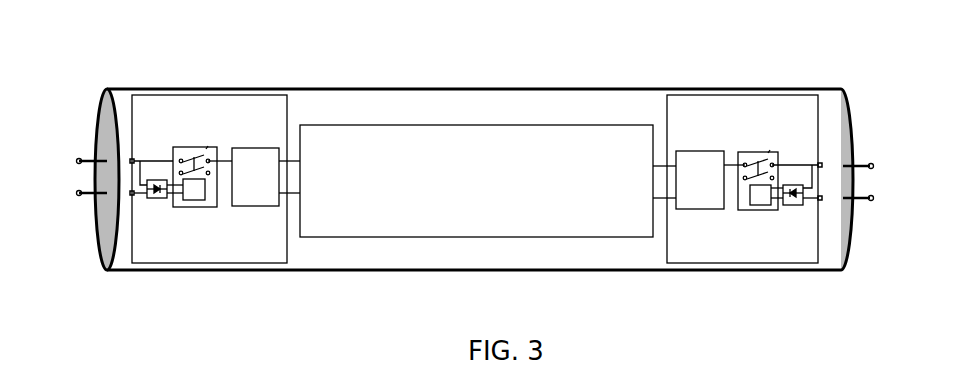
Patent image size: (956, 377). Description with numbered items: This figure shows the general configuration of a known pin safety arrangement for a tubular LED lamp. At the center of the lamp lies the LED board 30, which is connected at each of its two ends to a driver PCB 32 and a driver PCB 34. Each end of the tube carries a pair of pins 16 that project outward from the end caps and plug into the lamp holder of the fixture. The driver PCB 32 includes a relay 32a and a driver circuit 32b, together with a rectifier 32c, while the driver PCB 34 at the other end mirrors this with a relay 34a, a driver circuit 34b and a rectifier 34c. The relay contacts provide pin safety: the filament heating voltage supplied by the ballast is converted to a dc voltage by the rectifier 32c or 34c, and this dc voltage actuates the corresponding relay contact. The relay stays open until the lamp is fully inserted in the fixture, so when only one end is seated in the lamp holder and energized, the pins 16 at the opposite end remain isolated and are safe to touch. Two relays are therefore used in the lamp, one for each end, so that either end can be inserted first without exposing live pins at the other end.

The electrical pins / connector terminals 16 is at (72, 148).
The LED board 30 is at (542, 120).
The driver PCB 32 is at (235, 95).
The relay 32a is at (192, 207).
The driver circuit 32b is at (250, 206).
The rectifier 32c is at (157, 200).
The driver PCB 34 is at (718, 95).
The relay 34a is at (763, 211).
The driver circuit 34b is at (704, 209).
The rectifier 34c is at (794, 205).